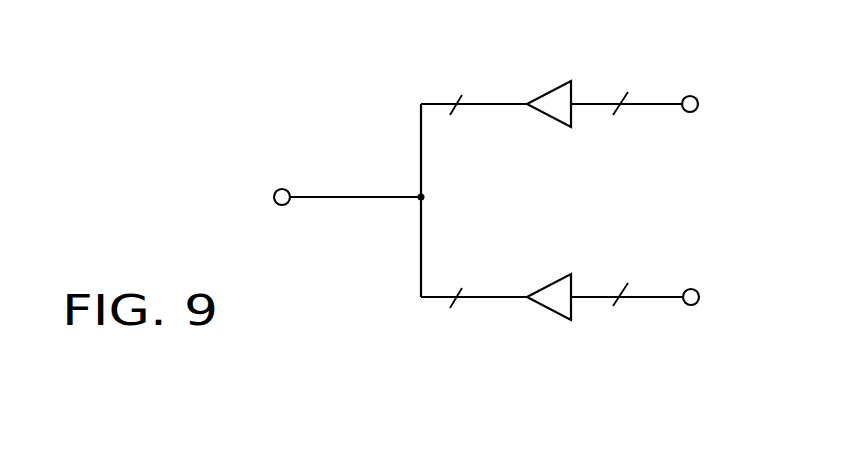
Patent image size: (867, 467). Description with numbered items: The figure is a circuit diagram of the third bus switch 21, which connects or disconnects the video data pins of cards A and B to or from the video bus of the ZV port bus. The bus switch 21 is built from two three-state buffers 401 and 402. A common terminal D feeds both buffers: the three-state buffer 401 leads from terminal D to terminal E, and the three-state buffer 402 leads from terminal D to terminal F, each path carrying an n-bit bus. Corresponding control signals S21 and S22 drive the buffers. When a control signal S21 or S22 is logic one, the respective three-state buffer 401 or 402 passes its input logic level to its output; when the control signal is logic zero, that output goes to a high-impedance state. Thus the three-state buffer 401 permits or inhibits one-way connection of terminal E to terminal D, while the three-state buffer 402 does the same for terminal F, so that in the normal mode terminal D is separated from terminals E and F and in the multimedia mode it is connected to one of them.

The bus switch 21 is at (643, 367).
The 3-state buffer 401 is at (573, 97).
The 3-state buffer 402 is at (573, 287).
The control signal S21 is at (556, 82).
The control signal S22 is at (556, 320).